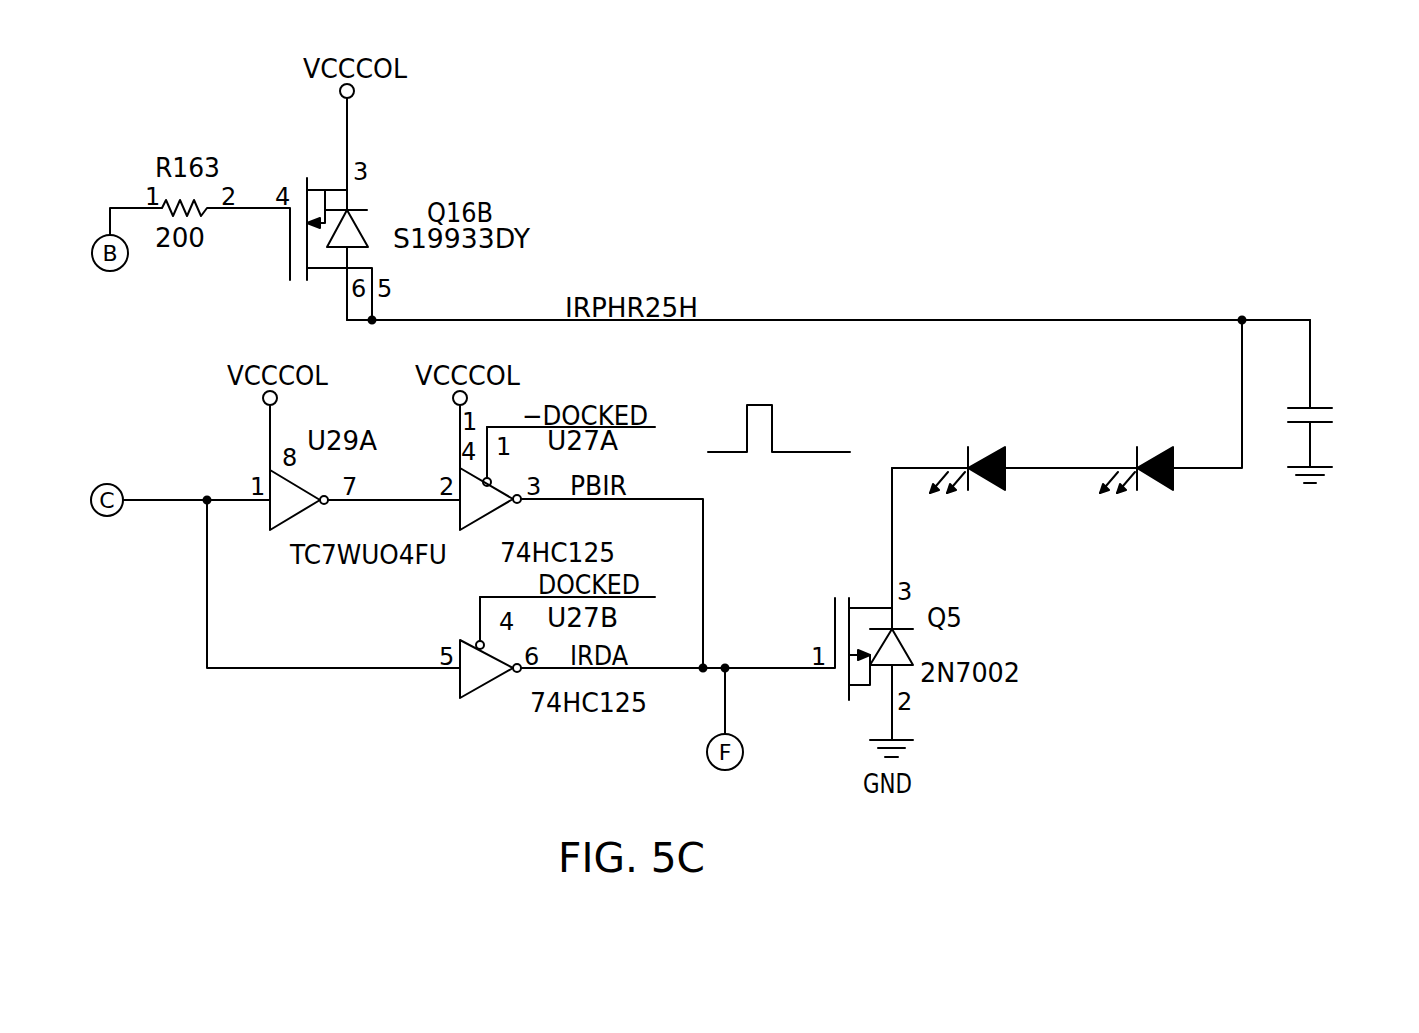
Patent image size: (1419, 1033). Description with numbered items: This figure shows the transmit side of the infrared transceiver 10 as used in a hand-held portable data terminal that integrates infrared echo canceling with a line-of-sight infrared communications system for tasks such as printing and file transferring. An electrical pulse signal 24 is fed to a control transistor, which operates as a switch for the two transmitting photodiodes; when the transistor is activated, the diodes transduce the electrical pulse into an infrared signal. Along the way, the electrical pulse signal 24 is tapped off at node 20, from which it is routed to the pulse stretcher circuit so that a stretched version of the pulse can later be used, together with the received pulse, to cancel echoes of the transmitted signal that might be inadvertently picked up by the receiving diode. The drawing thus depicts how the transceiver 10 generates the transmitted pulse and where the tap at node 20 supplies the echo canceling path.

The transceiver 10 is at (1148, 285).
The node 20 is at (732, 655).
The electrical pulse signal 24 is at (775, 395).